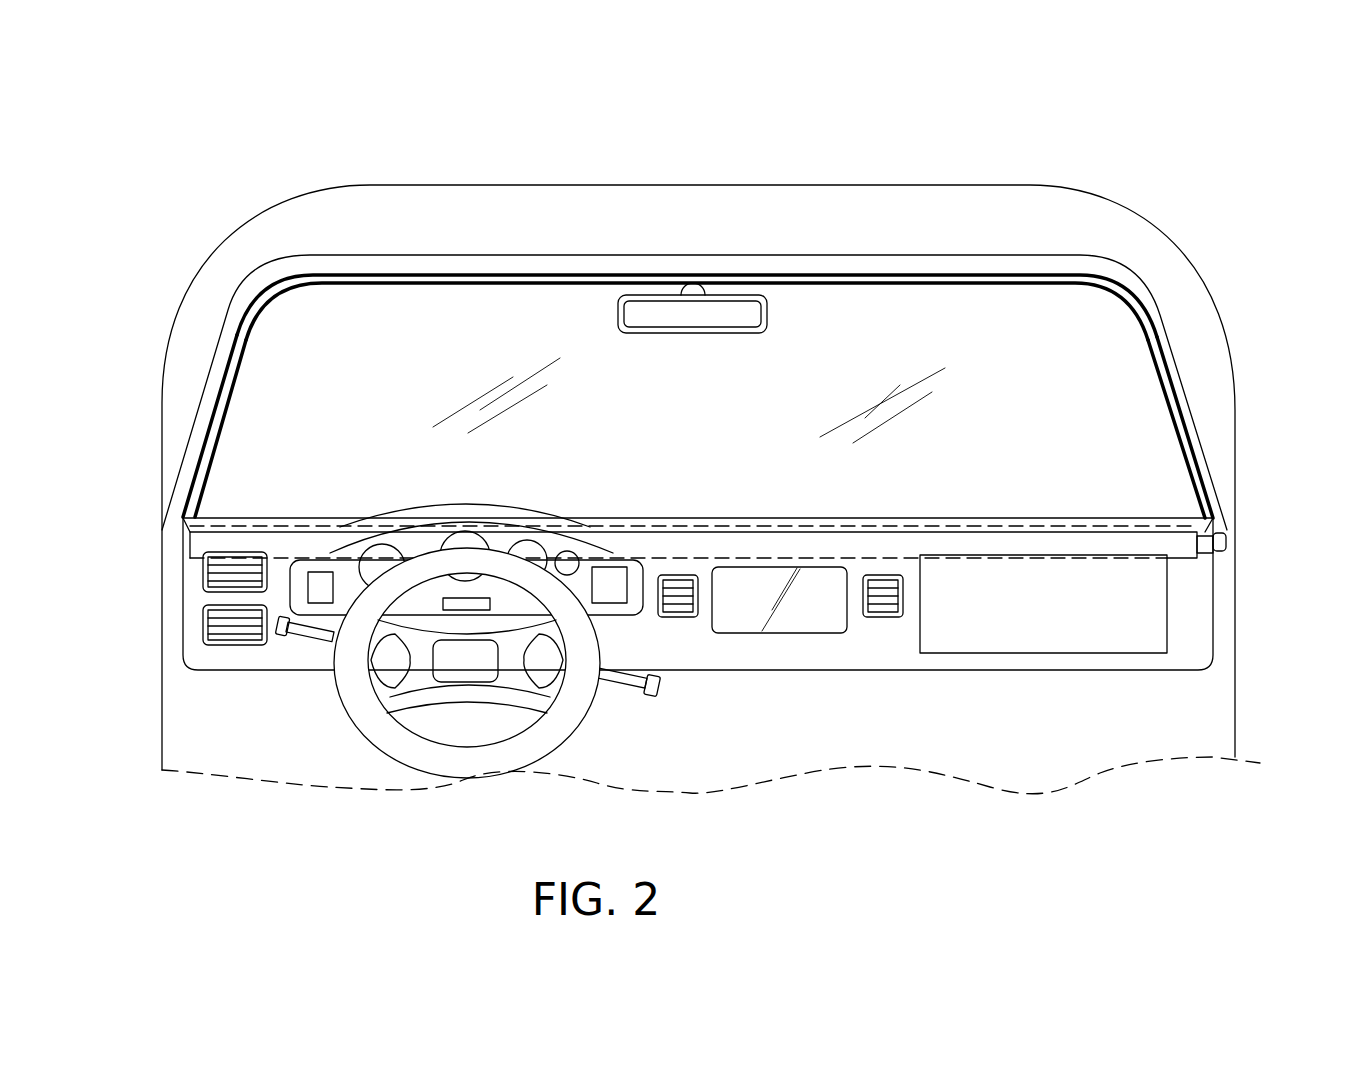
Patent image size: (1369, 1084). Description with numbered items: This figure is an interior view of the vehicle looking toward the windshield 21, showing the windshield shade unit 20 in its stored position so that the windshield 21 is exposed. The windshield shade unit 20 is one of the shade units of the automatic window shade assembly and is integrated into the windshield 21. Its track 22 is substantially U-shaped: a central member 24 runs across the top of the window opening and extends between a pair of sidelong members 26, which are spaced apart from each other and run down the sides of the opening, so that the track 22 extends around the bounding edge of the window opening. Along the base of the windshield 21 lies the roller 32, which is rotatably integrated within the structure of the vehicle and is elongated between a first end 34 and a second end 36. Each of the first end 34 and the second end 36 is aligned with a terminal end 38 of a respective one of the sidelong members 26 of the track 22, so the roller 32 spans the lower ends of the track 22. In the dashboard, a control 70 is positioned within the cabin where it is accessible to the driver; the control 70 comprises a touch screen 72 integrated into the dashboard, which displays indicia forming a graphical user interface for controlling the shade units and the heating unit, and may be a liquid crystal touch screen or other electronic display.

The windshield shade unit 20 is at (272, 288).
The windshield 21 is at (473, 310).
The track 22 is at (1143, 310).
The central member 24 is at (722, 275).
The sidelong members 26 is at (220, 383).
The roller 32 is at (242, 558).
The first end 34 is at (190, 545).
The second end 36 is at (1220, 532).
The terminal end 38 is at (183, 517).
The control 70 is at (812, 567).
The touch screen 72 is at (785, 633).